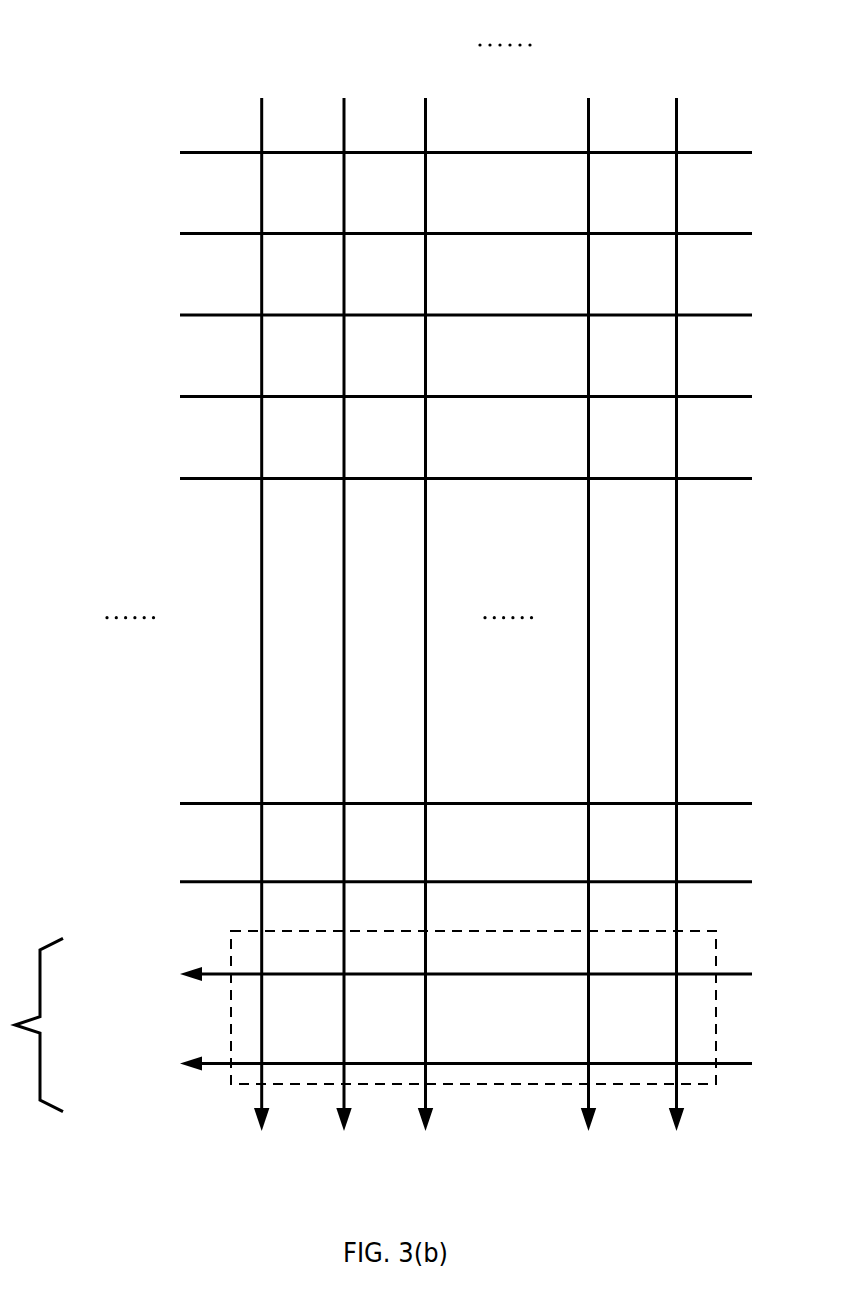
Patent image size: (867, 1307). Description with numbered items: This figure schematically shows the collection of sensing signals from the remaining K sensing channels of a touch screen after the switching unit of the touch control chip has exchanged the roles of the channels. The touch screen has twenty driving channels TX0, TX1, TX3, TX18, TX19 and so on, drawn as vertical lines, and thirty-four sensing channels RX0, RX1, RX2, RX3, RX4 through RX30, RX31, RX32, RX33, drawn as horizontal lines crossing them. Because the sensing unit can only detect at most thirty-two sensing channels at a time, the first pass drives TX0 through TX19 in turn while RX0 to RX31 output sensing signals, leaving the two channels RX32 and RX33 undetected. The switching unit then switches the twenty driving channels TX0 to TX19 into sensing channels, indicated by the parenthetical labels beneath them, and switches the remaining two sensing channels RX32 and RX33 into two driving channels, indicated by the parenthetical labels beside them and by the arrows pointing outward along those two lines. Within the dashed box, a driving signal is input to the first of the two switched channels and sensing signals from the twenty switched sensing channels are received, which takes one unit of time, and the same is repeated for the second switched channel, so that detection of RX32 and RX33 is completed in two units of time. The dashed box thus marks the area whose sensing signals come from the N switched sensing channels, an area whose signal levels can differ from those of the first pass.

The driving channel TX0 is at (261, 568).
The driving channel TX1 is at (346, 568).
The driving channel TX3 is at (428, 568).
The driving channel TX18 is at (588, 568).
The driving channel TX19 is at (680, 568).
The sensing channel RX0 is at (419, 154).
The sensing channel RX1 is at (419, 228).
The sensing channel RX2 is at (419, 315).
The sensing channel RX3 is at (419, 397).
The sensing channel RX4 is at (419, 479).
The sensing channel RX30 is at (417, 797).
The sensing channel RX31 is at (417, 882).
The sensing channel RX32 is at (412, 979).
The sensing channel RX33 is at (412, 1064).